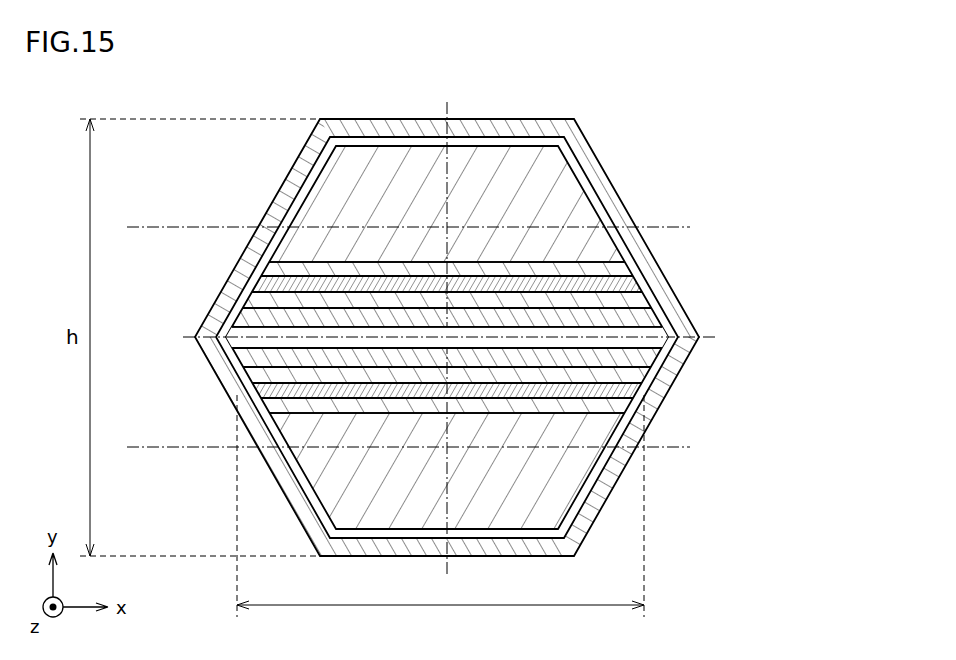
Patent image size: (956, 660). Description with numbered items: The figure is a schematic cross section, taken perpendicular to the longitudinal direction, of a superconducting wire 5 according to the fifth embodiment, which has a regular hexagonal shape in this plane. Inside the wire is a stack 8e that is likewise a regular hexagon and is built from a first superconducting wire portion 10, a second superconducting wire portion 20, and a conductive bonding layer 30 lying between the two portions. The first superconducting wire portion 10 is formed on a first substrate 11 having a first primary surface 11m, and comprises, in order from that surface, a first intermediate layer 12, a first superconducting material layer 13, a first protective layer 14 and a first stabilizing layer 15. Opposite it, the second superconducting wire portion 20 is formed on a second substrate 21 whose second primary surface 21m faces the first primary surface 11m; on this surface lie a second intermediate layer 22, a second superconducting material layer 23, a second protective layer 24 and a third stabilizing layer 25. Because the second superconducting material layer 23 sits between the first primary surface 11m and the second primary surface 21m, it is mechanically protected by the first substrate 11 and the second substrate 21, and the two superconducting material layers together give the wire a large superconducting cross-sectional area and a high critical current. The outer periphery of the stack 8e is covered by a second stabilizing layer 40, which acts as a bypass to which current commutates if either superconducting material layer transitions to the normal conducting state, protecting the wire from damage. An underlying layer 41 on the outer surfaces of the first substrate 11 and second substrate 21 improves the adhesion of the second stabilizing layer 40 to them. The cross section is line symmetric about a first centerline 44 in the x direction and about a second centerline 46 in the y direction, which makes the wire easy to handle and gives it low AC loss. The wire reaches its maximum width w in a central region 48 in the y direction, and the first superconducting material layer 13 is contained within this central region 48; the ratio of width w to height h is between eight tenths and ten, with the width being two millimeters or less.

The superconducting wire 5 is at (699, 93).
The second stabilizing layer 40 is at (512, 126).
The underlying layer 41 is at (520, 143).
The second primary surface 21m is at (505, 258).
The second substrate 21 is at (545, 241).
The second intermediate layer 22 is at (568, 268).
The second superconducting material layer 23 is at (585, 285).
The second protective layer 24 is at (598, 300).
The third stabilizing layer 25 is at (608, 316).
The second superconducting wire portion 20 is at (765, 150).
The conductive bonding layer 30 is at (620, 333).
The stack 8e is at (810, 207).
The first stabilizing layer 15 is at (600, 356).
The first protective layer 14 is at (590, 374).
The first superconducting material layer 13 is at (580, 391).
The first intermediate layer 12 is at (565, 409).
The first substrate 11 is at (512, 415).
The first primary surface 11m is at (547, 435).
The first superconducting wire portion 10 is at (765, 360).
The first centerline 44 is at (440, 517).
The second centerline 46 is at (195, 337).
The central region 48 is at (137, 227).